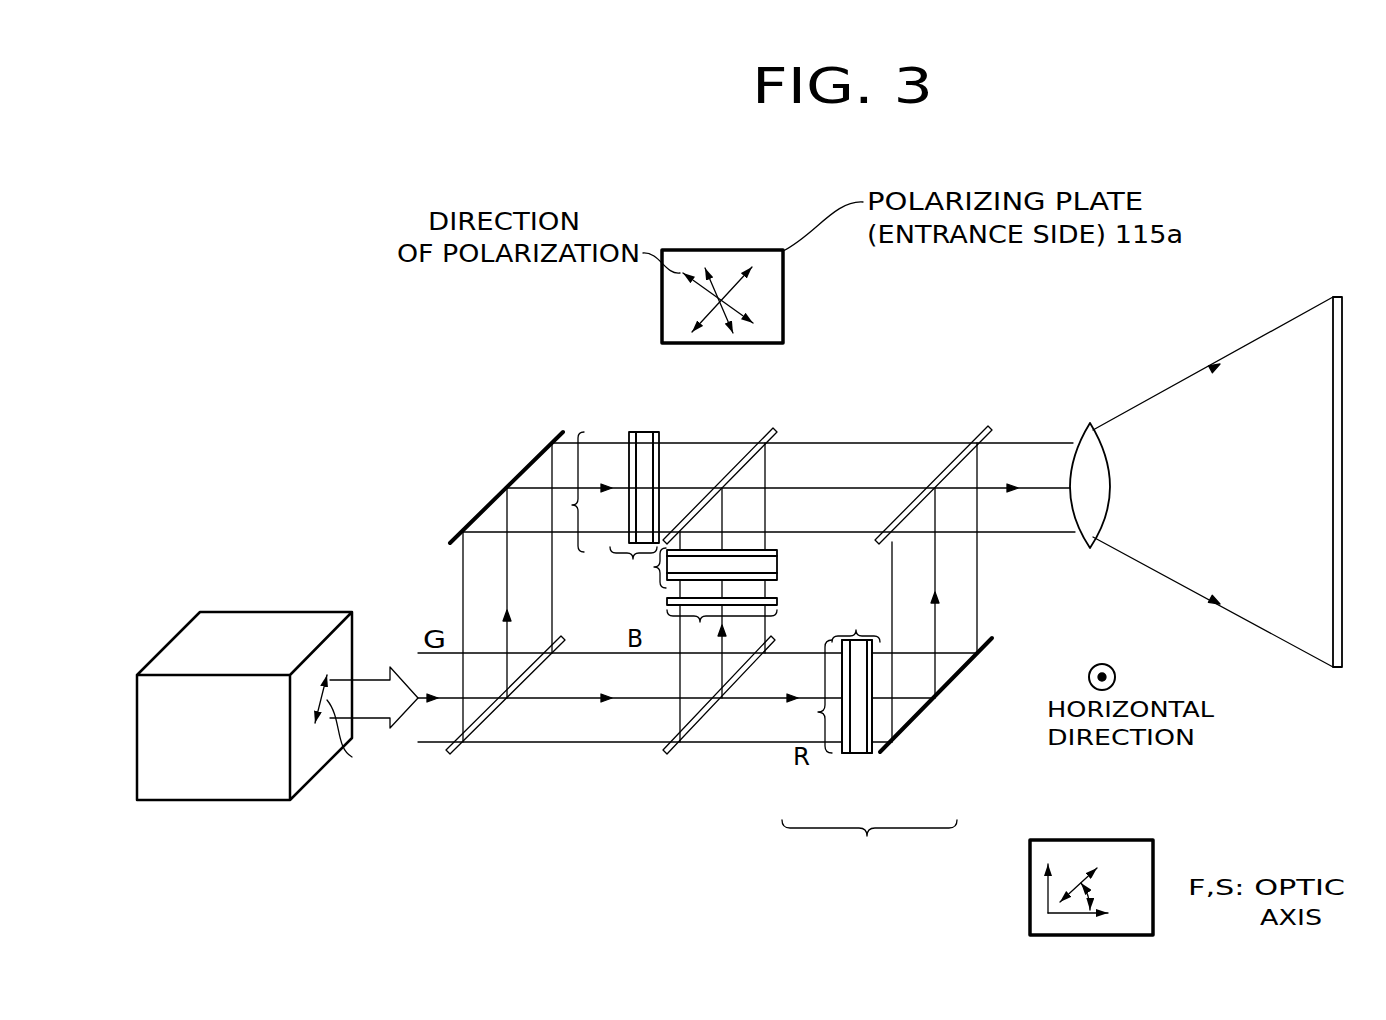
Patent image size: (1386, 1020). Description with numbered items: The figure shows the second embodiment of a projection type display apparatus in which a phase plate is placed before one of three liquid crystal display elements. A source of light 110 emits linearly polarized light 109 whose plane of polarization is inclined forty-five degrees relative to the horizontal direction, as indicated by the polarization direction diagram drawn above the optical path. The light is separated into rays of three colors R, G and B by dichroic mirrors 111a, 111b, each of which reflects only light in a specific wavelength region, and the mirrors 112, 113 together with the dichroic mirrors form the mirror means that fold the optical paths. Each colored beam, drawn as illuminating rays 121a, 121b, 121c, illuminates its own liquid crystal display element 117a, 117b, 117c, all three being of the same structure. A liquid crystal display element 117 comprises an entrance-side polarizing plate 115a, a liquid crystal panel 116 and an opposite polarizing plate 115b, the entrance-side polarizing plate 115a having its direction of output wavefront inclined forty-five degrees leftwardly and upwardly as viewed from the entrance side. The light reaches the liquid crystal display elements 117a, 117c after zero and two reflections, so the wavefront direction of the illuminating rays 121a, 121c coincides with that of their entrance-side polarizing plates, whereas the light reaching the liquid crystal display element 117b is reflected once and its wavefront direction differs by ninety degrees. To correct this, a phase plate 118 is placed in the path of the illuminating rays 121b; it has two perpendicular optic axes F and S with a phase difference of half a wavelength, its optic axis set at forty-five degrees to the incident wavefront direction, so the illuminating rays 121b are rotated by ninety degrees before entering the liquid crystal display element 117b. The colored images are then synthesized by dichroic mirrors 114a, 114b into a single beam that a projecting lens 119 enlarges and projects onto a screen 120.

The linearly polarized light 109 is at (367, 680).
The source of light 110 is at (252, 800).
The dichroic mirror 111a is at (450, 754).
The dichroic mirror 111b is at (667, 754).
The mirror 112 is at (497, 495).
The mirror 113 is at (957, 677).
The dichroic mirror 114a is at (775, 430).
The dichroic mirror 114b is at (988, 428).
The entrance-side polarizing plate 115a is at (633, 432).
The polarizing plate (exit side) 115b is at (660, 432).
The liquid crystal panel 116 is at (645, 432).
The liquid crystal display element 117 is at (883, 875).
The liquid crystal display element 117a is at (856, 630).
The liquid crystal display element 117b is at (655, 568).
The liquid crystal display element 117c is at (631, 562).
The phase plate 118 is at (778, 604).
The projecting lens 119 is at (1090, 548).
The screen 120 is at (1333, 667).
The illuminating rays 121a is at (818, 712).
The illuminating rays 121b is at (752, 268).
The illuminating rays 121c is at (705, 266).